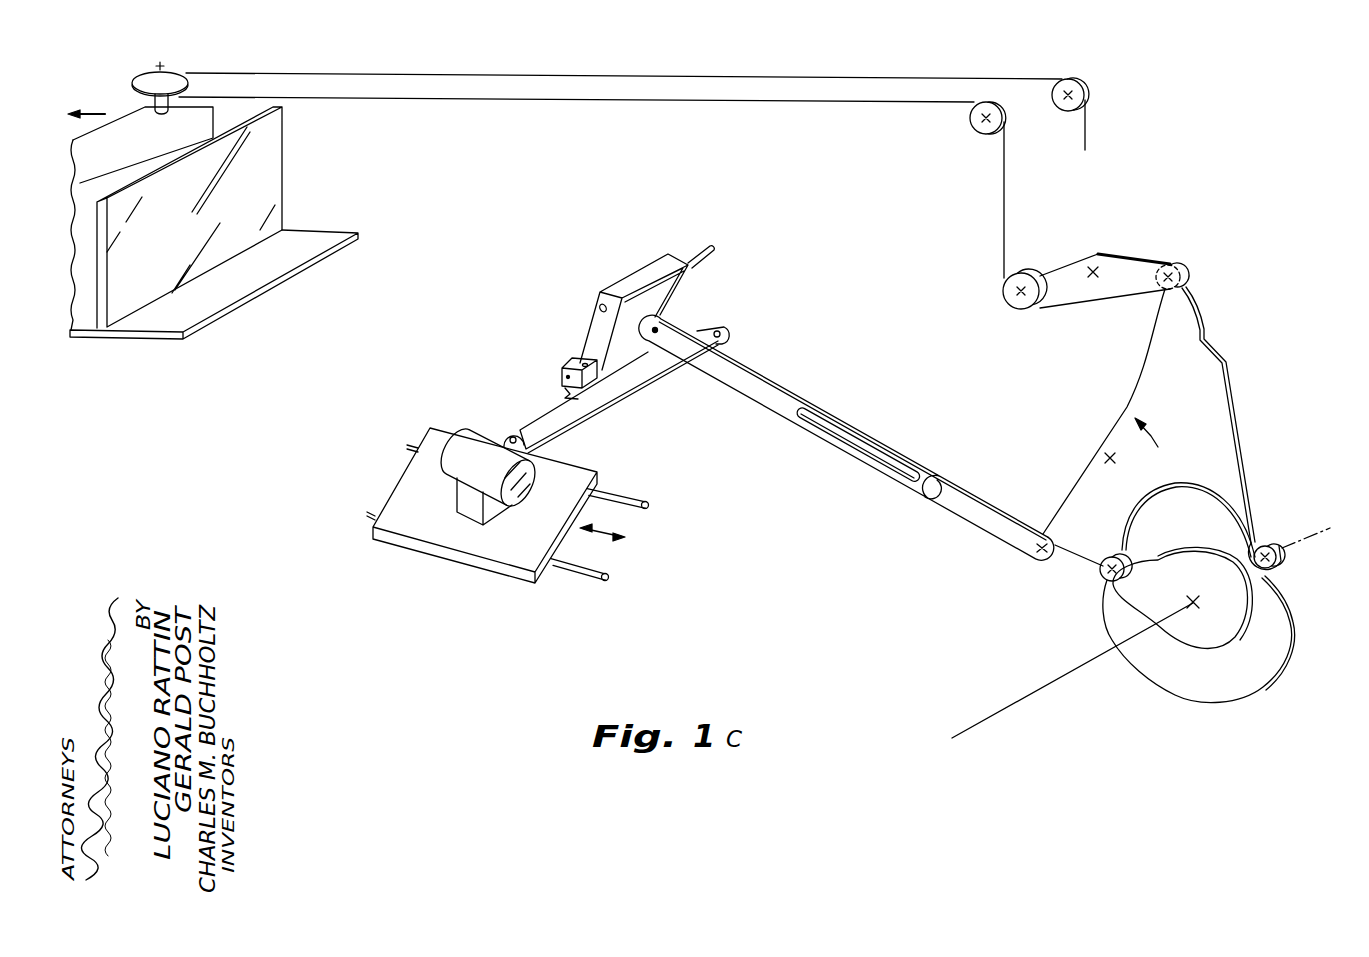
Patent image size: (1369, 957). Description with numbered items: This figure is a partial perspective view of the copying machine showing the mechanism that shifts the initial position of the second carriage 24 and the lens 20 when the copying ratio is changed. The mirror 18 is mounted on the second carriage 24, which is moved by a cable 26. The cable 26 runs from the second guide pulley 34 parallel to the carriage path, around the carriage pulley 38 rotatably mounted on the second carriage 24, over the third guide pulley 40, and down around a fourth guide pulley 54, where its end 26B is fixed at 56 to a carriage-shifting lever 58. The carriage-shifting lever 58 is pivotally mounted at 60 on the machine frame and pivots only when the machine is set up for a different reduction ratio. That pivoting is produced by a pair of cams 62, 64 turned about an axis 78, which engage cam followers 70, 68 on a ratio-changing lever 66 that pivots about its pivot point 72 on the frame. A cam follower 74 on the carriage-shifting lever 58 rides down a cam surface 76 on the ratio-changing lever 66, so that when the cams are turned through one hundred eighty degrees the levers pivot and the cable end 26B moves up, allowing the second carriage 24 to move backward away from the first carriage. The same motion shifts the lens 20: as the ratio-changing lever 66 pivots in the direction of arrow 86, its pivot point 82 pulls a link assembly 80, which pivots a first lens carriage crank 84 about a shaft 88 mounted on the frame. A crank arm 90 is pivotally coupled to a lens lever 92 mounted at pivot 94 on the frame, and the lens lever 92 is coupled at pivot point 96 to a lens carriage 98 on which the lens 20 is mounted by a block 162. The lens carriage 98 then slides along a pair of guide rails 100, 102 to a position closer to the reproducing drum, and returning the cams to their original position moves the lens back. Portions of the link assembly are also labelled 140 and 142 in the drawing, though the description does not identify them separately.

The mirror 18 is at (285, 172).
The lens 20 is at (523, 483).
The second carriage 24 is at (150, 337).
The cable 26 is at (842, 100).
The cable end 26B is at (1058, 282).
The second guide pulley 34 is at (1083, 82).
The carriage pulley 38 is at (158, 72).
The third guide pulley 40 is at (971, 126).
The fourth guide pulley 54 is at (1015, 307).
The cable attachment point 56 is at (1060, 280).
The carriage-shifting lever 58 is at (1143, 252).
The pivot 60 is at (1097, 268).
The cam 62 is at (1262, 687).
The cam 64 is at (1187, 633).
The ratio-changing lever 66 is at (1228, 397).
The cam follower 68 is at (1100, 575).
The cam follower 70 is at (1278, 544).
The pivot point 72 is at (1109, 453).
The cam follower 74 is at (1185, 265).
The cam surface 76 is at (1203, 318).
The axis 78 is at (1026, 713).
The link assembly 80 is at (852, 446).
The pivot point 82 is at (1041, 549).
The first lens carriage crank 84 is at (644, 268).
The arrow 86 is at (1165, 432).
The shaft 88 is at (697, 248).
The crank arm 90 is at (588, 333).
The lens lever 92 is at (606, 405).
The pivot 94 is at (722, 328).
The pivot point 96 is at (513, 434).
The lens carriage 98 is at (593, 471).
The guide rail 100 is at (608, 575).
The guide rail 102 is at (633, 496).
The arm 140 is at (953, 511).
The arm 142 is at (754, 401).
The block 162 is at (467, 512).